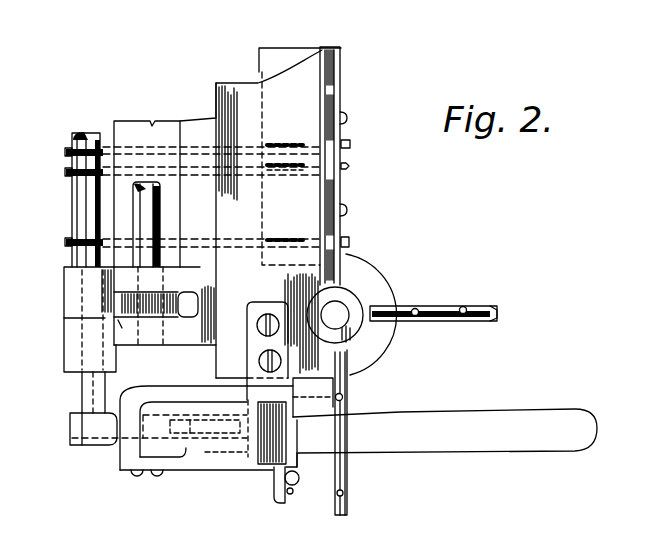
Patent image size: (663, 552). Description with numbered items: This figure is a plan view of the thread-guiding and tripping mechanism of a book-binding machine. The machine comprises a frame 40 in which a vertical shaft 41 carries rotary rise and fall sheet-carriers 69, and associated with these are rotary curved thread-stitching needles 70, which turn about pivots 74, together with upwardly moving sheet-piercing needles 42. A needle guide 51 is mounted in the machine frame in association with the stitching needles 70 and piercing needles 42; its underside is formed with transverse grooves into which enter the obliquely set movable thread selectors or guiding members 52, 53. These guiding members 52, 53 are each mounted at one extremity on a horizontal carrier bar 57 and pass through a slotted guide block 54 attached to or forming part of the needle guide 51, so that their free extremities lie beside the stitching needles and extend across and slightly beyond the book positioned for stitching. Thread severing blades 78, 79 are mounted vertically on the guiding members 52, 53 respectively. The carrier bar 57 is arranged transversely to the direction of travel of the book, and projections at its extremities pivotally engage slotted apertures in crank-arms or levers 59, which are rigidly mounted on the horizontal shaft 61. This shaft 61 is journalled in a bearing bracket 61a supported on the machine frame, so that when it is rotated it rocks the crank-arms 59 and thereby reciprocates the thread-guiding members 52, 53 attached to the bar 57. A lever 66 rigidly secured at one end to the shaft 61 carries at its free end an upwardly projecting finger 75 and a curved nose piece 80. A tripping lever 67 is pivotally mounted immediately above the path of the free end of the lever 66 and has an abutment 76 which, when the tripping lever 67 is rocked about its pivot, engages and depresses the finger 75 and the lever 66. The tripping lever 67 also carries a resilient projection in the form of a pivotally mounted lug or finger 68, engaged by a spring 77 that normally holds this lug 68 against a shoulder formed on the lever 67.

The frame 40 is at (383, 352).
The vertical shaft 41 is at (336, 312).
The sheet-piercing needles 42 is at (463, 306).
The needle guide 51 is at (277, 53).
The thread selector or guiding member 52 is at (67, 153).
The thread selector or guiding member 53 is at (67, 175).
The slotted guide block 54 is at (152, 128).
The carrier bar 57 is at (70, 198).
The crank-arms or levers 59 is at (62, 280).
The horizontal shaft 61 is at (85, 392).
The bearing bracket 61a is at (120, 326).
The lever 66 is at (110, 433).
The tripping lever 67 is at (427, 440).
The lug or finger 68 is at (347, 397).
The sheet-carriers 69 is at (347, 471).
The thread-stitching needles 70 is at (332, 135).
The pivots 74 is at (343, 121).
The finger 75 is at (240, 435).
The abutment 76 is at (185, 465).
The spring 77 is at (297, 482).
The thread severing blade 78 is at (284, 141).
The thread severing blade 79 is at (280, 177).
The curved nose piece 80 is at (300, 424).